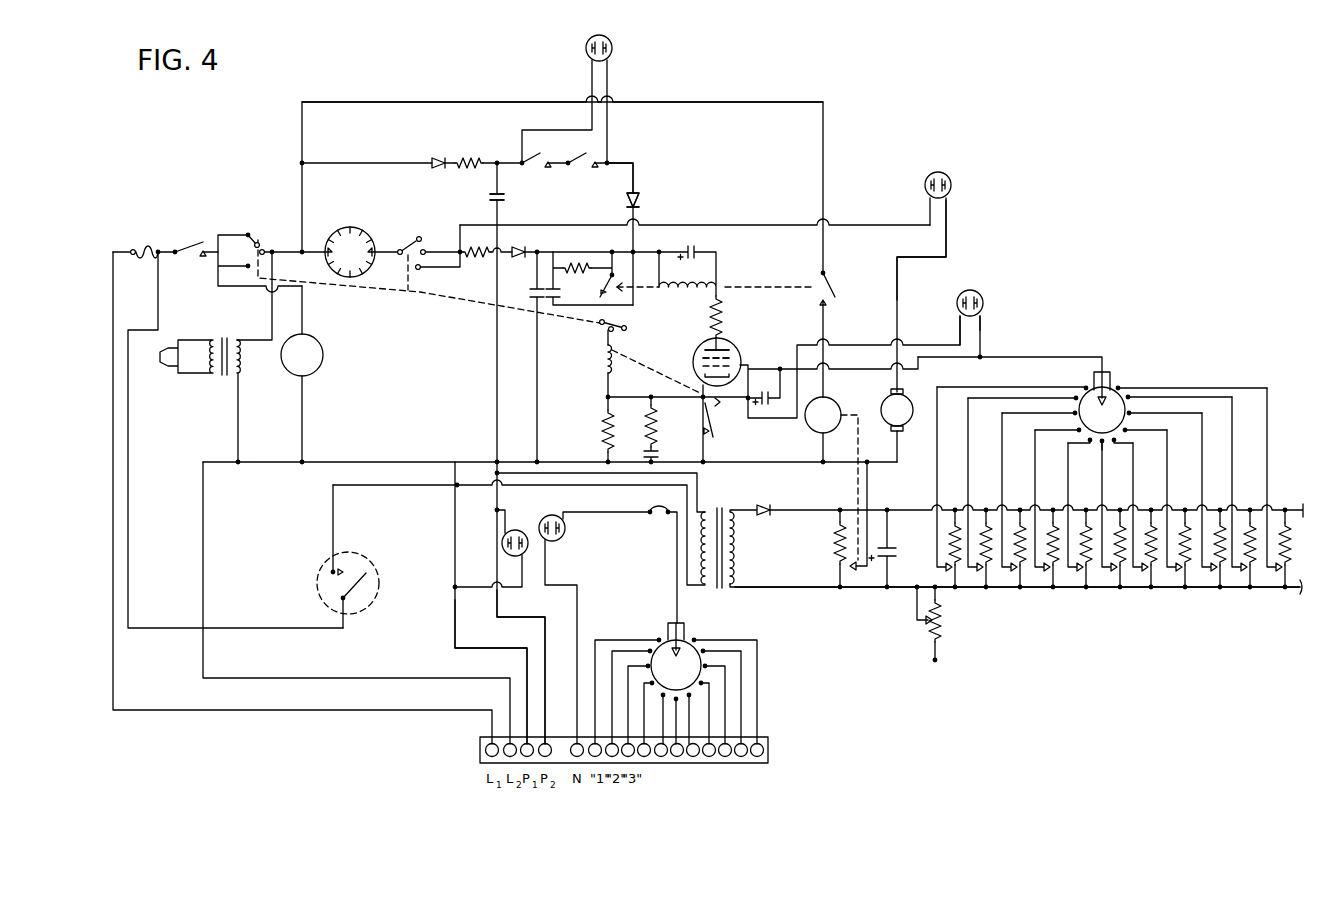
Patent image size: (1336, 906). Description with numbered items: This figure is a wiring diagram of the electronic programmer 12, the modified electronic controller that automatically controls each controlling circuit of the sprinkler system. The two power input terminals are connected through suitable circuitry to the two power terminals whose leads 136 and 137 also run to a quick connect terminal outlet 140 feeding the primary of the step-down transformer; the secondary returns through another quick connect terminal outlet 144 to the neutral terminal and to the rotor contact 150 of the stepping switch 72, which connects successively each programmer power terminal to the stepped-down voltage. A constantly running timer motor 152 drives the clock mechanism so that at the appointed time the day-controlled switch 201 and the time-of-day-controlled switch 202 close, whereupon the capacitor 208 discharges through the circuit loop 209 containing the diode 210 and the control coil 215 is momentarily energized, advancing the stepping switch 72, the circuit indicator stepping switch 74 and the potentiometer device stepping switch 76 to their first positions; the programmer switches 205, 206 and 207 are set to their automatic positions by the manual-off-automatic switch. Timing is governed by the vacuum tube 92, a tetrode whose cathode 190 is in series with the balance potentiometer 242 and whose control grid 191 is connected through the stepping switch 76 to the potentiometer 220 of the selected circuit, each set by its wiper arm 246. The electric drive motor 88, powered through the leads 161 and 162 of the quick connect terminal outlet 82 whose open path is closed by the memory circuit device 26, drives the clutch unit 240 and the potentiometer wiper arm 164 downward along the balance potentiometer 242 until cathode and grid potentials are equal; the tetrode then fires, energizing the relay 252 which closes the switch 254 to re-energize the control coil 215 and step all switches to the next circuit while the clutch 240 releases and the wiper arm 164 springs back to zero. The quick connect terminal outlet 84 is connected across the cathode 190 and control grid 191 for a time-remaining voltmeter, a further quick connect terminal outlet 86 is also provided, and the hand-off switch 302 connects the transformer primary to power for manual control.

The electronic programmer 12 is at (801, 76).
The memory circuit device 26 is at (1070, 596).
The stepping switch 72 is at (701, 622).
The circuit indicator stepping switch 74 is at (343, 228).
The potentiometer device stepping switch 76 is at (1110, 372).
The quick connect terminal outlet 82 is at (948, 172).
The quick connect terminal outlet 84 is at (978, 290).
The quick connect terminal outlet 86 is at (611, 40).
The electric drive motor 88 is at (905, 399).
The vacuum tube 92 is at (743, 337).
The lead 136 is at (470, 651).
The lead 137 is at (513, 621).
The quick connect terminal outlet 140 is at (511, 527).
The quick connect terminal outlet 144 is at (565, 538).
The rotor contact 150 is at (667, 625).
The timer motor 152 is at (323, 352).
The lead 161 is at (843, 222).
The lead 162 is at (948, 230).
The potentiometer wiper arm 164 is at (871, 556).
The cathode 190 is at (700, 365).
The control grid 191 is at (724, 366).
The switch 201 is at (541, 148).
The switch 202 is at (585, 148).
The programmer switch 205 is at (257, 237).
The programmer switch 206 is at (405, 243).
The programmer switch 207 is at (628, 326).
The capacitor 208 is at (505, 198).
The circuit loop 209 is at (639, 172).
The diode 210 is at (642, 200).
The control coil 215 is at (604, 364).
The potentiometer 220 is at (1020, 570).
The clutch unit 240 is at (840, 395).
The balance potentiometer 242 is at (833, 545).
The wiper arm 246 is at (937, 516).
The relay 252 is at (713, 283).
The switch 254 is at (615, 283).
The hand-off switch 302 is at (372, 607).